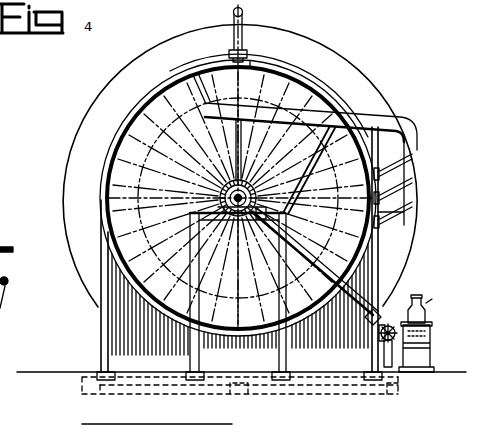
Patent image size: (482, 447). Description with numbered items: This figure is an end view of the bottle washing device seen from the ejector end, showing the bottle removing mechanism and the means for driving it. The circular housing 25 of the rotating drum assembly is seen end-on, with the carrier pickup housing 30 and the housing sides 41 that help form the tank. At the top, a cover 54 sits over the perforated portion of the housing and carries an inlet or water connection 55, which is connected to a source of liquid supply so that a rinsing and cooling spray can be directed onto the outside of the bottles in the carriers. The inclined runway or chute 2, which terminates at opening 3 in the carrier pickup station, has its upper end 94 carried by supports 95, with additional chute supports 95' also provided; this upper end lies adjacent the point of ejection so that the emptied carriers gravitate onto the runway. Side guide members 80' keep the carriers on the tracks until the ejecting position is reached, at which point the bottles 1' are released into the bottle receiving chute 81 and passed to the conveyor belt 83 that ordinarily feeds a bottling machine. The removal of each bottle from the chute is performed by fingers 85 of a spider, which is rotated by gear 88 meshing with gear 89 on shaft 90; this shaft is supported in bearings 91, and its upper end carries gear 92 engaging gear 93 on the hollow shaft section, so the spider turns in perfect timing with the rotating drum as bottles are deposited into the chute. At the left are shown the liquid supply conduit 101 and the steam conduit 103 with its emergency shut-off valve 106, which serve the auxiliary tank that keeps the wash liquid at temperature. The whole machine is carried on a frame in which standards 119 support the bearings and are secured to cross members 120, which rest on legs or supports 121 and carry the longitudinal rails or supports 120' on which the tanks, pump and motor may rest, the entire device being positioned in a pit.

The bottles 1' is at (443, 294).
The inclined runway or chute 2 is at (413, 117).
The opening 3 is at (398, 192).
The housing 25 is at (107, 174).
The carrier pickup housing 30 is at (337, 70).
The housing sides 41 is at (384, 274).
The cover 54 is at (288, 67).
The inlet or water connection 55 is at (244, 53).
The side guide members 80' is at (150, 303).
The bottle receiving chute 81 is at (395, 302).
The conveyor belt 83 is at (430, 327).
The fingers 85 is at (388, 334).
The gear 88 is at (380, 347).
The gear 89 is at (378, 338).
The shaft 90 is at (310, 260).
The bearings 91 is at (253, 297).
The gear 92 is at (207, 318).
The gear 93 is at (158, 169).
The upper end of the inclined runway 94 is at (200, 112).
The supports 95 is at (278, 150).
The additional chute supports 95' is at (416, 183).
The conduit 101 is at (9, 309).
The conduit 103 is at (0, 246).
The emergency shut-off valve 106 is at (0, 273).
The standards 119 is at (278, 352).
The cross members 120 is at (240, 398).
The longitudinal rails or supports 120' is at (240, 398).
The legs or supports 121 is at (230, 395).